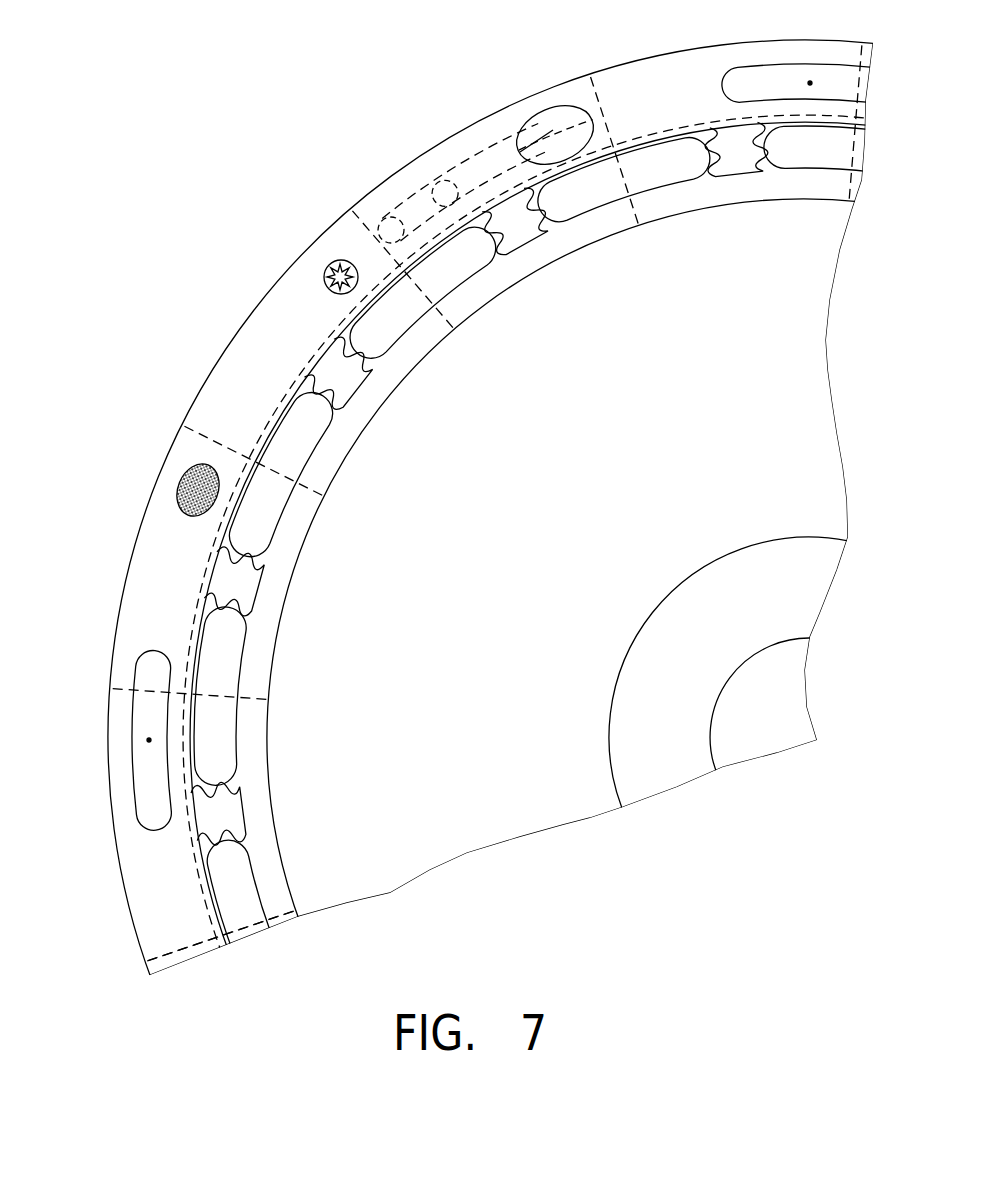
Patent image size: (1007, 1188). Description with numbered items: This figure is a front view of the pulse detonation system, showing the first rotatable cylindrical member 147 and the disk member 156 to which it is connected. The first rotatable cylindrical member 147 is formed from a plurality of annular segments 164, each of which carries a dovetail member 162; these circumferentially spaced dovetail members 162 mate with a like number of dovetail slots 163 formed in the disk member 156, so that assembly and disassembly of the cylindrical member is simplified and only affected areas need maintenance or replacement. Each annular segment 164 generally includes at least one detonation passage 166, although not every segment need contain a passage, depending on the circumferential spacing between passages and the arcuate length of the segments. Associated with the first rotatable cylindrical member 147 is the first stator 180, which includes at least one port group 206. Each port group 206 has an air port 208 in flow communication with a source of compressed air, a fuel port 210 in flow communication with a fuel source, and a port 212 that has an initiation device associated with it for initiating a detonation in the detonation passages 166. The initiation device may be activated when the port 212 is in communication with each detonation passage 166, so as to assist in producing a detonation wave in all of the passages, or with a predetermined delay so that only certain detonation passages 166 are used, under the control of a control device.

The first rotatable cylindrical member 147 is at (382, 429).
The disk member 156 is at (515, 822).
The dovetail member 162 is at (520, 247).
The dovetail slot 163 is at (540, 236).
The annular segment 164 is at (372, 200).
The detonation passage 166 is at (477, 147).
The first stator 180 is at (296, 244).
The port group 206 is at (112, 486).
The air port 208 is at (155, 662).
The fuel port 210 is at (187, 517).
The port 212 is at (323, 285).